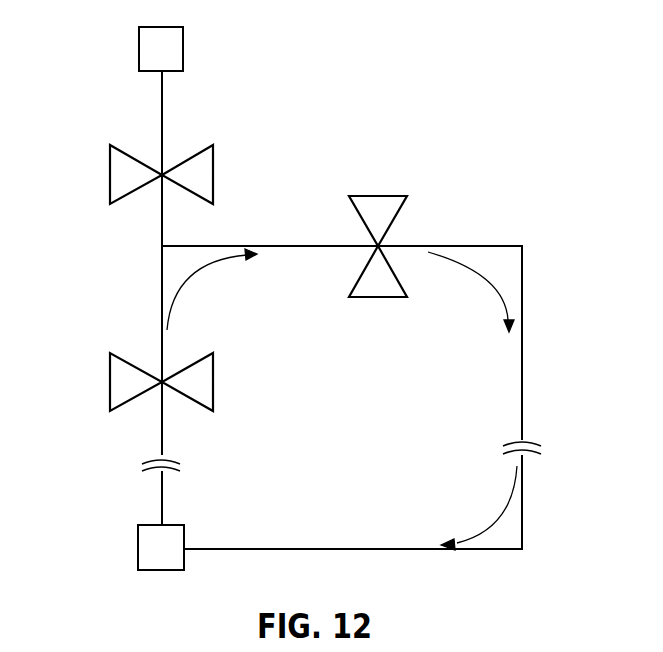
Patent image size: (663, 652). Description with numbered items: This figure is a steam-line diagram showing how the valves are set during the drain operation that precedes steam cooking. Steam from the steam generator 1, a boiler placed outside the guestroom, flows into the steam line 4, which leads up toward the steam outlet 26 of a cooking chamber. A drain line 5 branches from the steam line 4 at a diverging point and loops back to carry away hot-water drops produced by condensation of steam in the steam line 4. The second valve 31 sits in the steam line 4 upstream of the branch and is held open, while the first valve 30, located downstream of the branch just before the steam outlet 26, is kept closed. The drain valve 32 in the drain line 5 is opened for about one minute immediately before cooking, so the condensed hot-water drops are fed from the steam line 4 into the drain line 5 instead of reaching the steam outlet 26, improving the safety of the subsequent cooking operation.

The steam generator 1 is at (150, 546).
The steam line 4 is at (161, 322).
The drain line 5 is at (323, 245).
The steam outlet 26 is at (153, 55).
The first valve 30 is at (193, 167).
The second valve 31 is at (198, 381).
The drain valve 32 is at (376, 210).